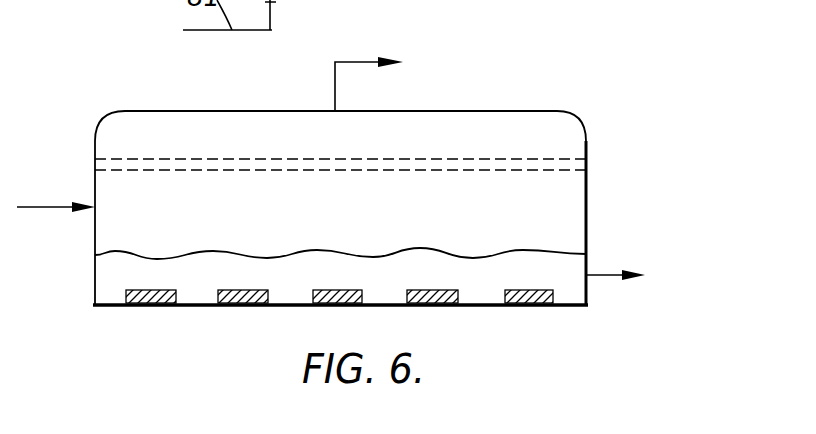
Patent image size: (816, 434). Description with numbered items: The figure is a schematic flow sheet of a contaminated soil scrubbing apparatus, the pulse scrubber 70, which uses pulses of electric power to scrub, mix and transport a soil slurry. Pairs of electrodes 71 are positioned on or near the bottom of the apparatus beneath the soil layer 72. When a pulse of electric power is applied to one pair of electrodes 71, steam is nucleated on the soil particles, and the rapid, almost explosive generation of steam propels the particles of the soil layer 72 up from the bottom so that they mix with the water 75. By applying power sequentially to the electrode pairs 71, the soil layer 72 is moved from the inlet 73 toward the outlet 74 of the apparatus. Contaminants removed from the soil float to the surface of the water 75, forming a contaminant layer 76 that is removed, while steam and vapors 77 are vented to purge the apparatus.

The pulse scrubber 70 is at (455, 79).
The electrodes 71 is at (340, 305).
The soil layer 72 is at (190, 280).
The inlet 73 is at (52, 206).
The outlet 74 is at (610, 277).
The water 75 is at (393, 207).
The contaminant layer 76 is at (270, 160).
The steam and vapors 77 is at (362, 62).